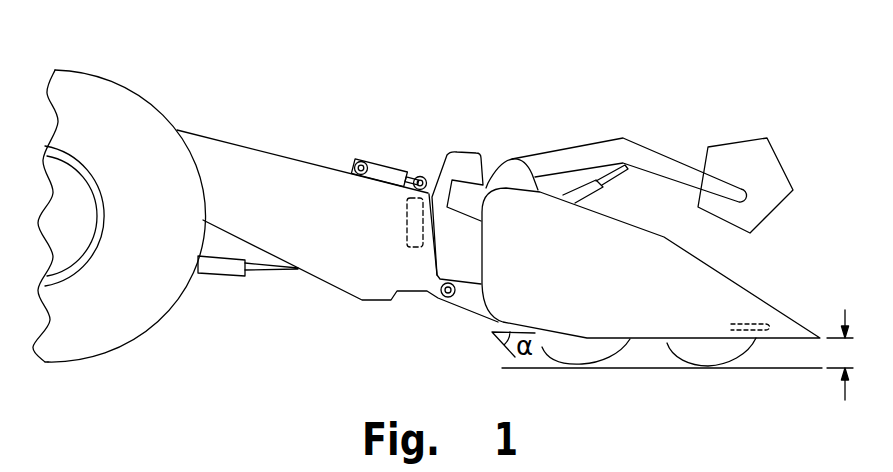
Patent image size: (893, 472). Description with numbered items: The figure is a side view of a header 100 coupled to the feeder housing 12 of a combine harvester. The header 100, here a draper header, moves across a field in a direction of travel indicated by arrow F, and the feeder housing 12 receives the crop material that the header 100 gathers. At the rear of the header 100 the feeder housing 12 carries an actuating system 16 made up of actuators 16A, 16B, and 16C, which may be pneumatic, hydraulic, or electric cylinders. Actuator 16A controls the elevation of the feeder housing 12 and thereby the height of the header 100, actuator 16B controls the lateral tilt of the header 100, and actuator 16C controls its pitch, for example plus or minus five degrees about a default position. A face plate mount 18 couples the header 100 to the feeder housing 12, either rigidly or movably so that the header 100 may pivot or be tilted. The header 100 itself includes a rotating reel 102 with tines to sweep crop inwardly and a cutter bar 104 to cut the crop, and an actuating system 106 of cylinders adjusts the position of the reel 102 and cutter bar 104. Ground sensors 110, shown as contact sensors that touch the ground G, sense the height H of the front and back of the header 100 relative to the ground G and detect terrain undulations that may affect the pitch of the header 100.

The feeder housing 12 is at (217, 147).
The actuating system 16 is at (385, 174).
The actuator 16A is at (218, 274).
The actuator 16B is at (412, 197).
The actuator 16C is at (380, 167).
The face plate mount 18 is at (472, 129).
The header 100 is at (668, 81).
The rotating reel 102 is at (777, 155).
The cutter bar 104 is at (750, 305).
The actuating system 106 is at (591, 153).
The ground sensors 110 is at (580, 367).
The direction of travel F is at (783, 228).
The height H is at (840, 355).
The ground G is at (760, 372).